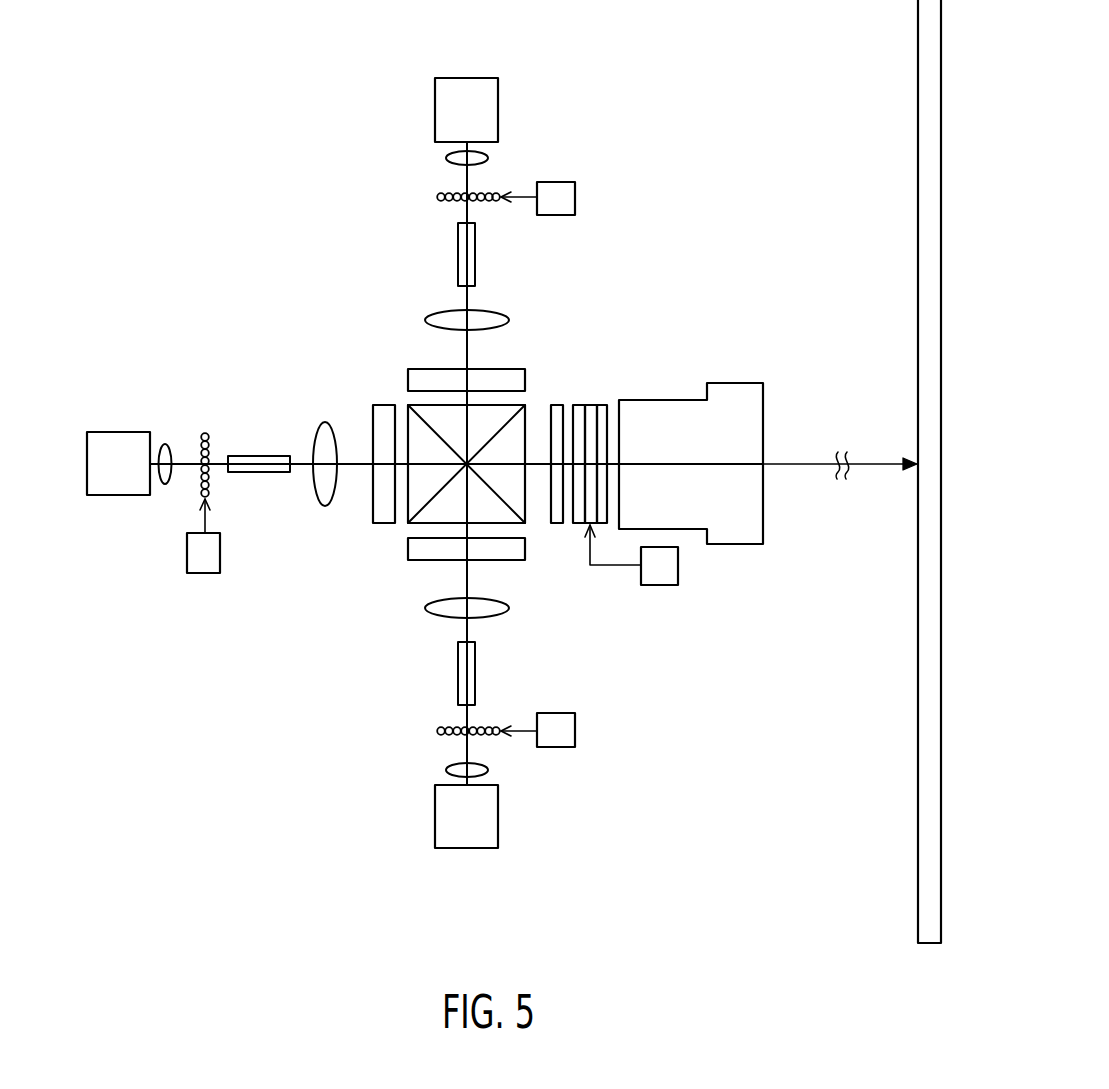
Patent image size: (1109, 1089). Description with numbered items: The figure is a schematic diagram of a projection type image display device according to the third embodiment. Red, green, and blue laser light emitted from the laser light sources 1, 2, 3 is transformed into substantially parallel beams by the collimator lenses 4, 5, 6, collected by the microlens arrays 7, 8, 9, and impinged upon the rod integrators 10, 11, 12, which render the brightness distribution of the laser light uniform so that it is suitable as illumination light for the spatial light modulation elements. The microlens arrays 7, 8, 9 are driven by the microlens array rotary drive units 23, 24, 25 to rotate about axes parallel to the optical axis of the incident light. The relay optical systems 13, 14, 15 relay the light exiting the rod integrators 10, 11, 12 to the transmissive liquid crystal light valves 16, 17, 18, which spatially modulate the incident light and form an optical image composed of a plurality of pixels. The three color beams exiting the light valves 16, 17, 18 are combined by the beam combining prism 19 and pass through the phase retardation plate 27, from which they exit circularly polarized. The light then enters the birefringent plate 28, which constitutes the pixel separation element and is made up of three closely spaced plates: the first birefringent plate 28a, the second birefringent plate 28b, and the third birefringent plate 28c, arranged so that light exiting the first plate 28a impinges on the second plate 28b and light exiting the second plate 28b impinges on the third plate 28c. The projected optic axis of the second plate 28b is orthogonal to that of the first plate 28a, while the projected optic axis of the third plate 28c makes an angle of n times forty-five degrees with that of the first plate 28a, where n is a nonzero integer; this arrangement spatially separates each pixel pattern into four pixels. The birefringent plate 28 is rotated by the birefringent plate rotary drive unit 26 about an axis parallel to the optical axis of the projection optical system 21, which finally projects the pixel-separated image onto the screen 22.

The red laser light source 1 is at (498, 817).
The green laser light source 2 is at (120, 495).
The blue laser light source 3 is at (498, 113).
The collimator lens 4 is at (488, 770).
The collimator lens 5 is at (166, 484).
The collimator lens 6 is at (488, 158).
The microlens array 7 is at (436, 731).
The microlens array 8 is at (205, 432).
The microlens array 9 is at (436, 197).
The rod integrator 10 is at (475, 675).
The rod integrator 11 is at (260, 472).
The rod integrator 12 is at (475, 253).
The relay optical system 13 is at (509, 608).
The relay optical system 14 is at (326, 506).
The relay optical system 15 is at (505, 313).
The transmissive liquid crystal light valve 16 is at (525, 552).
The transmissive liquid crystal light valve 17 is at (383, 523).
The transmissive liquid crystal light valve 18 is at (507, 369).
The beam combining prism 19 is at (407, 420).
The projection optical system 21 is at (681, 400).
The screen 22 is at (918, 225).
The microlens array rotary drive unit 23 is at (575, 731).
The microlens array rotary drive unit 24 is at (205, 573).
The microlens array rotary drive unit 25 is at (575, 197).
The birefringent plate rotary drive unit 26 is at (663, 585).
The phase retardation plate 27 is at (557, 405).
The birefringent plate 28 is at (624, 397).
The first birefringent plate 28a is at (579, 405).
The second birefringent plate 28b is at (591, 405).
The third birefringent plate 28c is at (602, 405).